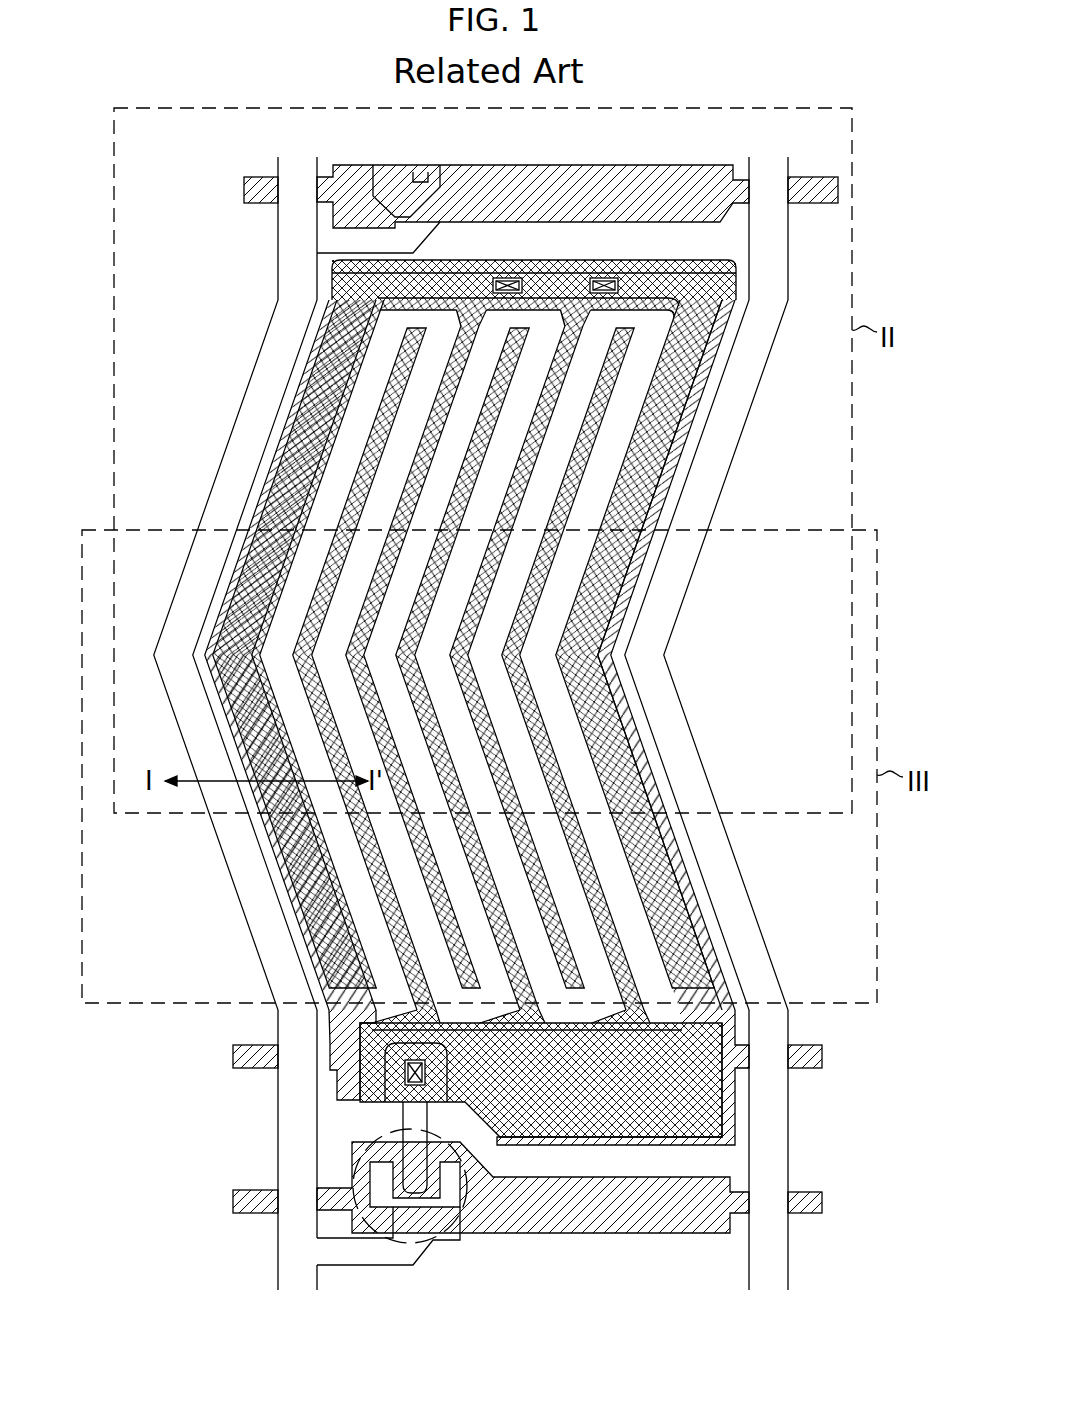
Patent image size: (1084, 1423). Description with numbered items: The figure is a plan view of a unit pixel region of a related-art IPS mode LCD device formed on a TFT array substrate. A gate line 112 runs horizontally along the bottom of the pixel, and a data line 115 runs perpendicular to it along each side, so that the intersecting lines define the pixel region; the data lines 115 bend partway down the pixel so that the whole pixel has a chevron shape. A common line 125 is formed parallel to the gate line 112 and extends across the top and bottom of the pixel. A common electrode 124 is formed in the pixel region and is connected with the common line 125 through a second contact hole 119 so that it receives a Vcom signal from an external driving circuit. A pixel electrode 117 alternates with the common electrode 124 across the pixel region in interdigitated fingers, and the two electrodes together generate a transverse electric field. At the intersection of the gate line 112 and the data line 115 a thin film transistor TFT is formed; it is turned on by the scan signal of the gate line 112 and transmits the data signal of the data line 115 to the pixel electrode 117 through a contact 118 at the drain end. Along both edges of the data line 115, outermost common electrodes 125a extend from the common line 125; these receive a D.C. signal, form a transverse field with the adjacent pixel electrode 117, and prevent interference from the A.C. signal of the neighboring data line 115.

The gate line 112 is at (822, 1201).
The data line 115 is at (245, 845).
The pixel electrode 117 is at (325, 598).
The drain contact hole 118 is at (410, 1072).
The second contact hole 119 is at (507, 277).
The common electrode 124 is at (300, 500).
The common line 125 is at (822, 1058).
The outermost common electrode 125a is at (300, 383).
The thin film transistor TFT is at (433, 1240).